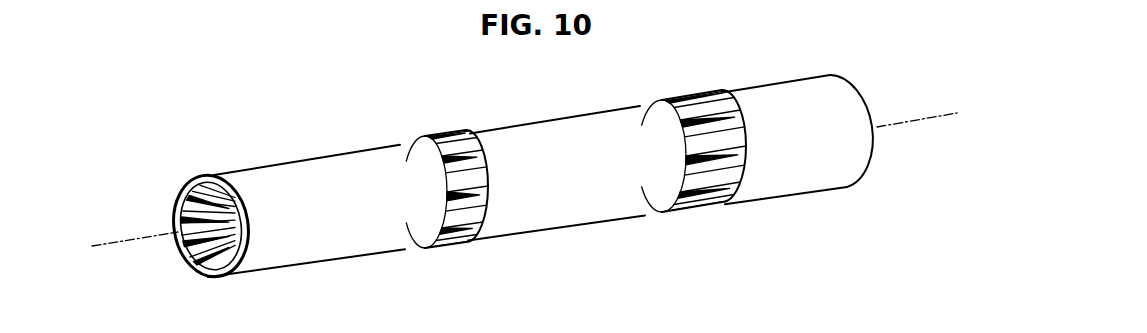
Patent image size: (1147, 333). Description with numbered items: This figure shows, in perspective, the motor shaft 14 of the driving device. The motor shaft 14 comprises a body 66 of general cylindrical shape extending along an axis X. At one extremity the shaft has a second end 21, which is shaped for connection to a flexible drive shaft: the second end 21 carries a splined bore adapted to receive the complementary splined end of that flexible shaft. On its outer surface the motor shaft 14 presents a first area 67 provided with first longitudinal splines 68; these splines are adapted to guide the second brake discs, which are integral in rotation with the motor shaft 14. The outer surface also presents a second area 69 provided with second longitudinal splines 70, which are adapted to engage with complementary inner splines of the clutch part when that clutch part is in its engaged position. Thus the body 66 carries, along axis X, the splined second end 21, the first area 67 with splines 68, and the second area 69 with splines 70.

The axis X is at (109, 238).
The second motor shaft 14 is at (554, 116).
The second end 21 is at (192, 252).
The body 66 is at (572, 202).
The first area 67 is at (702, 83).
The first longitudinal splines 68 is at (700, 113).
The second area 69 is at (387, 131).
The second longitudinal splines 70 is at (456, 149).